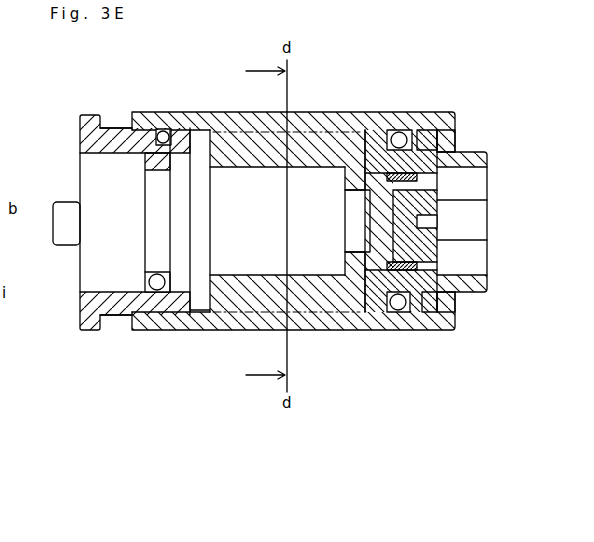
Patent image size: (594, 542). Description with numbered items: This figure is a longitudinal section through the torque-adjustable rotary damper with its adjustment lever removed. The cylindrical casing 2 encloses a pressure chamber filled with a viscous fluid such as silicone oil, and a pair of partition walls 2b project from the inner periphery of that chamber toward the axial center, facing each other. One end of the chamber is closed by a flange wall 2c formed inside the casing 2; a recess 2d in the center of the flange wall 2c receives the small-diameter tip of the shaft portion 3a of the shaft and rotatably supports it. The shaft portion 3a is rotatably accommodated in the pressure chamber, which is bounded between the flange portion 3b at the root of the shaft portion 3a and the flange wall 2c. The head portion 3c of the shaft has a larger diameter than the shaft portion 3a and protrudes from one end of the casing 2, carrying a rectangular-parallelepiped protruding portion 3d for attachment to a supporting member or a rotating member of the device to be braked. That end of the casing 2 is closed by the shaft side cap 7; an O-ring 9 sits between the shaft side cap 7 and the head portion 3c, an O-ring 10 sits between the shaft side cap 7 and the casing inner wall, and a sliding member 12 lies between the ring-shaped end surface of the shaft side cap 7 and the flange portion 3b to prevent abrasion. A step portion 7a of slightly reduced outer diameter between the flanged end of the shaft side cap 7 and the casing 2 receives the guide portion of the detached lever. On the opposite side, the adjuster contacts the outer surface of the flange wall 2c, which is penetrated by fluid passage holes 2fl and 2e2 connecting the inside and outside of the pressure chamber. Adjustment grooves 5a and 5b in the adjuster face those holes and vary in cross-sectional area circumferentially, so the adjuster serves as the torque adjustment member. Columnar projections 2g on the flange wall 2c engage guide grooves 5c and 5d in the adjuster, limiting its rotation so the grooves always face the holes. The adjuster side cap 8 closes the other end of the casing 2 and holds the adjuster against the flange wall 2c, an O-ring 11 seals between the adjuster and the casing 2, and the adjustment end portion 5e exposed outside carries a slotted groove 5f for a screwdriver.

The casing 2 is at (363, 221).
The partition wall 2b is at (258, 125).
The flange wall 2c is at (440, 208).
The recess 2d is at (308, 262).
The fluid passage hole 2e2 is at (347, 331).
The fluid passage hole 2fl is at (350, 108).
The columnar projection 2g is at (458, 142).
The shaft portion 3a is at (288, 190).
The flange portion 3b is at (205, 130).
The head portion 3c is at (95, 182).
The protruding portion 3d is at (62, 246).
The adjustment groove 5a is at (395, 112).
The adjustment groove 5b is at (393, 312).
The guide groove 5c is at (446, 182).
The guide groove 5d is at (440, 251).
The adjustment end portion 5e is at (487, 152).
The slotted groove 5f is at (440, 182).
The shaft side cap 7 is at (80, 127).
The step portion 7a is at (118, 127).
The adjuster side cap 8 is at (470, 137).
The O-ring 9 is at (173, 333).
The O-ring 10 is at (152, 333).
The O-ring 11 is at (383, 313).
The sliding member 12 is at (186, 128).